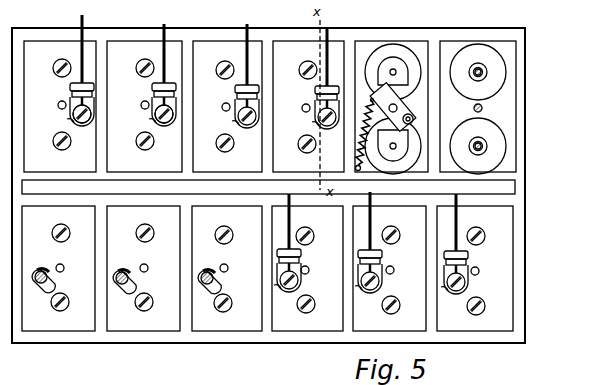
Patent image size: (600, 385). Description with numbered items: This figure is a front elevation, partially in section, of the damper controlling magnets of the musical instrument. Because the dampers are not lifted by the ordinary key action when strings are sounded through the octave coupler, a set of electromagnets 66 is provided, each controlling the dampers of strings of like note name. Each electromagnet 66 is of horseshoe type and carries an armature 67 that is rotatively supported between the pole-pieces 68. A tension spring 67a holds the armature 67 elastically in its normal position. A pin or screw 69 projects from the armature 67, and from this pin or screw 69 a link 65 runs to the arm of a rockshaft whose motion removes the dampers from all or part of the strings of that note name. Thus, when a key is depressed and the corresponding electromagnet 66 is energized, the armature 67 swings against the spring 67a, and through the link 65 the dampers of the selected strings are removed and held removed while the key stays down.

The link 65 is at (326, 52).
The electromagnet 66 is at (405, 55).
The armature 67 is at (400, 108).
The tension spring 67a is at (362, 133).
The pole-pieces 68 is at (383, 66).
The pin or screw 69 is at (156, 117).